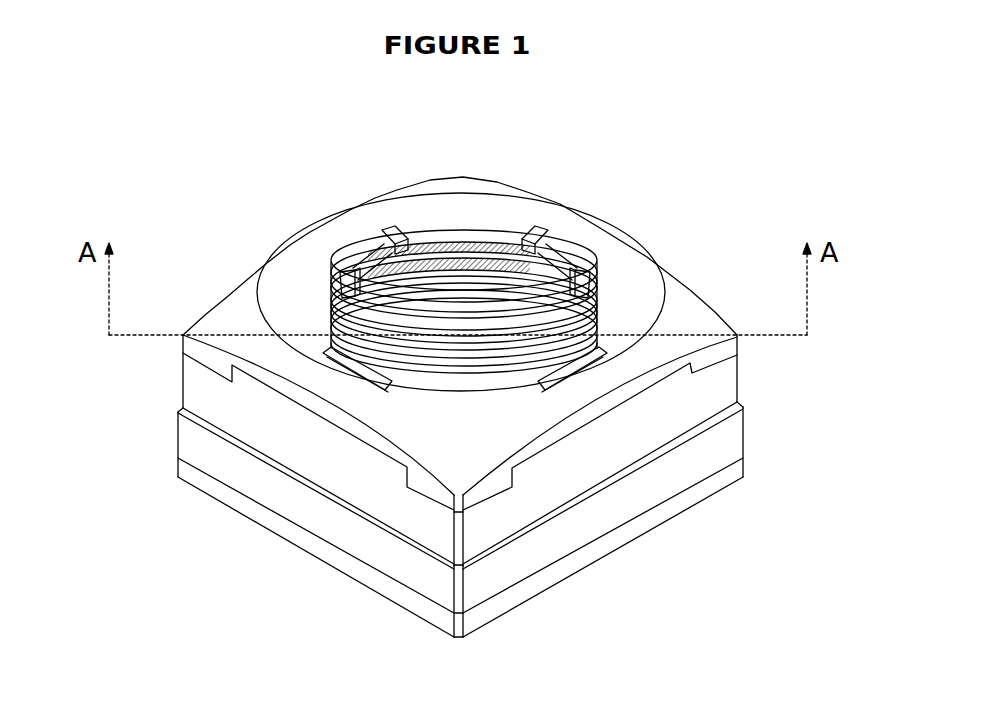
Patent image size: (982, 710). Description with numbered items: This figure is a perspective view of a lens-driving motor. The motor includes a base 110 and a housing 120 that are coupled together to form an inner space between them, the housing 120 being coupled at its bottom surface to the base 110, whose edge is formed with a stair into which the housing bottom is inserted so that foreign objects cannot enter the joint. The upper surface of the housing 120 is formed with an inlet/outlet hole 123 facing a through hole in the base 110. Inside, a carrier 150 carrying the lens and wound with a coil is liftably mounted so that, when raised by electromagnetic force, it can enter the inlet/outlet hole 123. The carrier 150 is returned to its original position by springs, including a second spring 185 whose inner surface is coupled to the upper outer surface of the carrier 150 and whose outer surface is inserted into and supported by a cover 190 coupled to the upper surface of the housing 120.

The base 110 is at (740, 462).
The housing 120 is at (728, 373).
The inlet/outlet hole 123 is at (580, 257).
The carrier 150 is at (466, 262).
The second spring 185 is at (372, 243).
The cover 190 is at (684, 308).